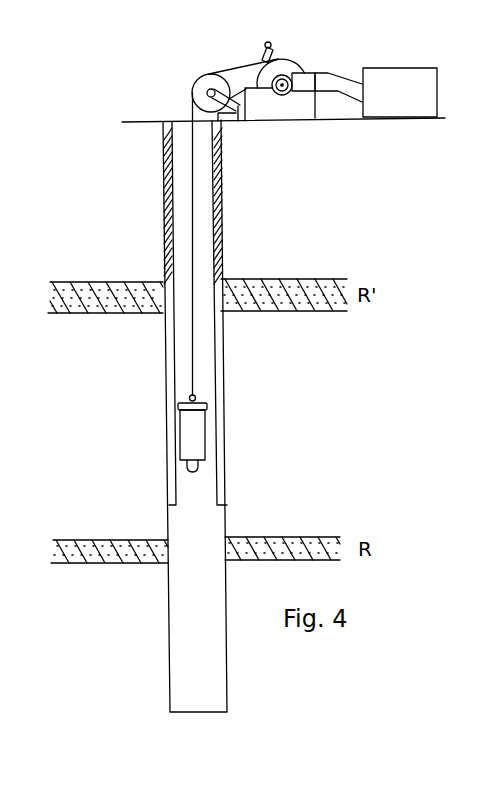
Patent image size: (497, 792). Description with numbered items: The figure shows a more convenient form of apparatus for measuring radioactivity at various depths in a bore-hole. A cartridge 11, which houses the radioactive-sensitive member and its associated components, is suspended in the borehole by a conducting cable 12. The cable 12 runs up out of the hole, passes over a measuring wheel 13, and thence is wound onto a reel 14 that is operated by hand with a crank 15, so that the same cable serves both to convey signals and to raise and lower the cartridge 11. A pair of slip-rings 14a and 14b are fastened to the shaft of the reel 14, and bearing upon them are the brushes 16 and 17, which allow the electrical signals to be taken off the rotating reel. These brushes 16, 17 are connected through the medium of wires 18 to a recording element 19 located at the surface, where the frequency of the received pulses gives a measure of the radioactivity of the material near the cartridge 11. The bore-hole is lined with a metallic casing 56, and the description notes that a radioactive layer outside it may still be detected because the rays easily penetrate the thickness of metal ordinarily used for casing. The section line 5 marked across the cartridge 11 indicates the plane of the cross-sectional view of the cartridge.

The section line 5- 5 is at (211, 384).
The cartridge 11 is at (210, 451).
The conducting cable 12 is at (195, 218).
The measuring wheel 13 is at (194, 83).
The reel 14 is at (293, 66).
The slip-ring 14a is at (285, 95).
The slip-ring 14b is at (270, 90).
The crank 15 is at (260, 51).
The brush 16 is at (278, 97).
The brush 17 is at (312, 80).
The wires 18 is at (326, 74).
The recording element 19 is at (400, 92).
The metallic casing 56 is at (224, 162).